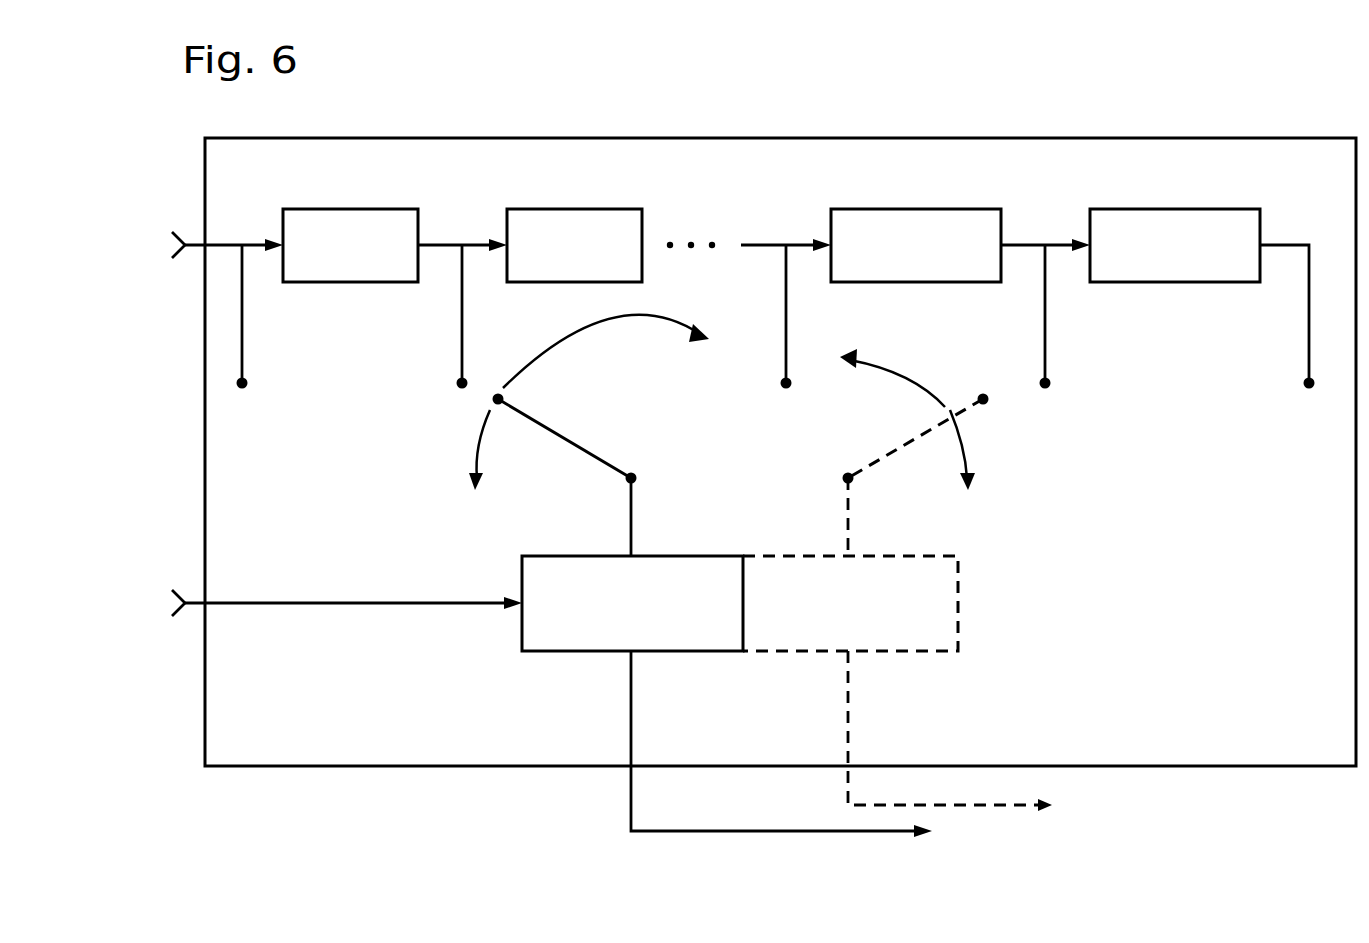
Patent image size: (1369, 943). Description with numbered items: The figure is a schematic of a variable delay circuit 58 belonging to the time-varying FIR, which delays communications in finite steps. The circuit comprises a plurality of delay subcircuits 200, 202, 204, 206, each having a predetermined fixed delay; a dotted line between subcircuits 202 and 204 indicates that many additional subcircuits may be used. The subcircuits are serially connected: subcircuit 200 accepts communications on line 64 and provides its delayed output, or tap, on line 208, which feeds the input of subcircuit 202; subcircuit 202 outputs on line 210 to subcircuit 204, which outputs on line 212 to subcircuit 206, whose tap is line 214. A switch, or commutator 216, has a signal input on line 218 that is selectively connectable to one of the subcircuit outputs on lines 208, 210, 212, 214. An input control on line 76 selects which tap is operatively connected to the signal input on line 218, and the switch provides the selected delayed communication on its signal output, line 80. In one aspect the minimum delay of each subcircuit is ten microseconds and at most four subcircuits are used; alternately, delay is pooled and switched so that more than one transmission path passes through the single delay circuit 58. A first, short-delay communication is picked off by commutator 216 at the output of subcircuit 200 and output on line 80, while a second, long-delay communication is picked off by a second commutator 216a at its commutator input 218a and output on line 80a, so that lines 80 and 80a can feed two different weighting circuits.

The variable delay circuit 58 is at (1350, 170).
The line 64 is at (195, 243).
The line 76 is at (193, 600).
The line 80 is at (730, 832).
The line 80a is at (1002, 805).
The delay subcircuit 200 is at (410, 236).
The delay subcircuit 202 is at (634, 236).
The delay subcircuit 204 is at (993, 236).
The delay subcircuit 206 is at (1252, 236).
The line 208 is at (470, 243).
The line 210 is at (792, 243).
The line 212 is at (1047, 243).
The line 214 is at (1295, 243).
The commutator 216 is at (733, 587).
The commutator 216a is at (948, 587).
The line 218 is at (632, 513).
The commutator input 218a is at (849, 513).